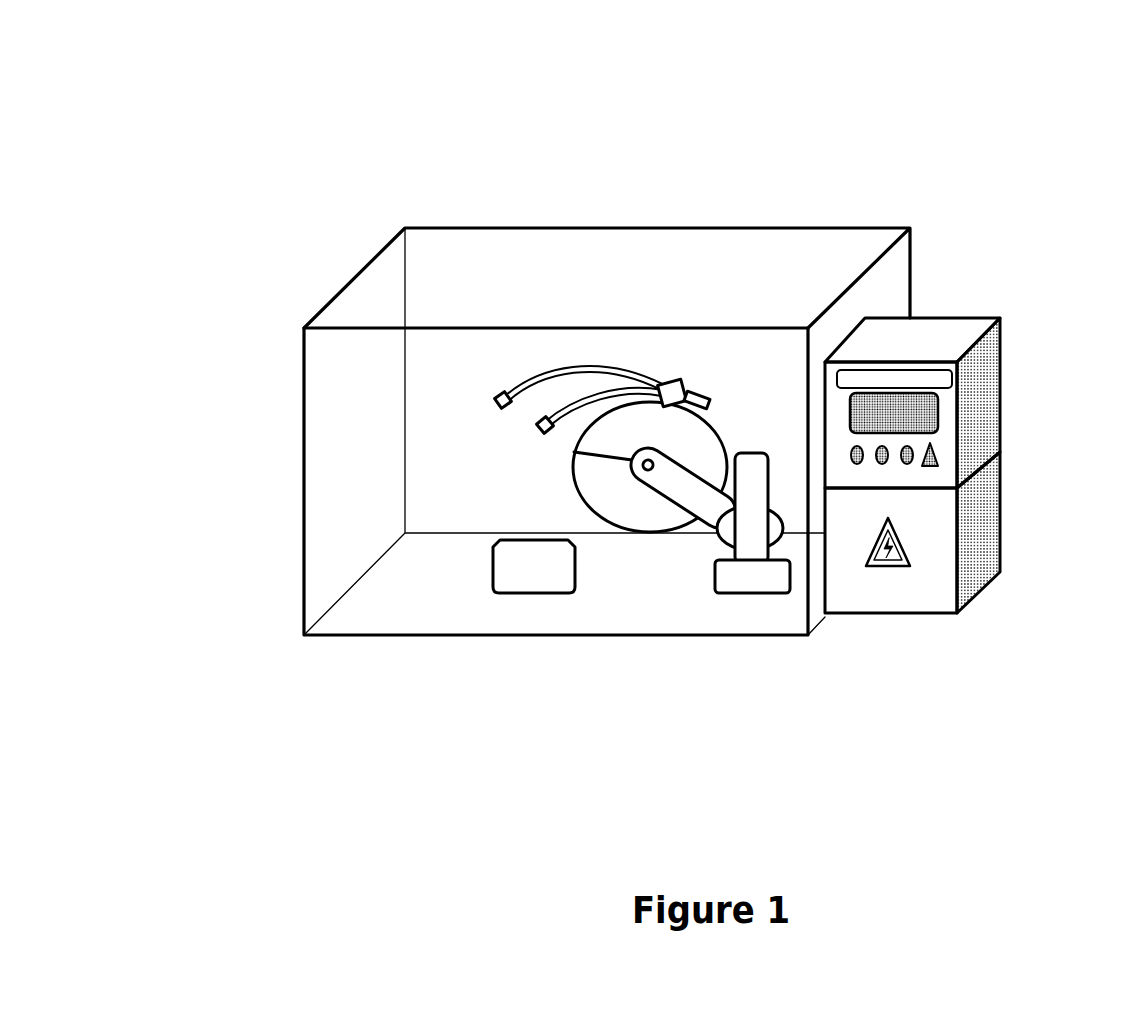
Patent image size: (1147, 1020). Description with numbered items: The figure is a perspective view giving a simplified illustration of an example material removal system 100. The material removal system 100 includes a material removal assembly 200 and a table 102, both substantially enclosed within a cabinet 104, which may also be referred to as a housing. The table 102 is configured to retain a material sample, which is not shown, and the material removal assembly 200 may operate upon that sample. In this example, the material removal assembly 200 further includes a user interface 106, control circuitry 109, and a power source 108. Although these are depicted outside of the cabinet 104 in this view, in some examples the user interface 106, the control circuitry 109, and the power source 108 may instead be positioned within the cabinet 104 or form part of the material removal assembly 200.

The material removal system 100 is at (262, 80).
The table 102 is at (534, 566).
The cabinet 104 is at (304, 483).
The user interface 106 is at (1000, 383).
The power source 108 is at (1000, 508).
The control circuitry 109 is at (893, 362).
The material removal assembly 200 is at (688, 358).